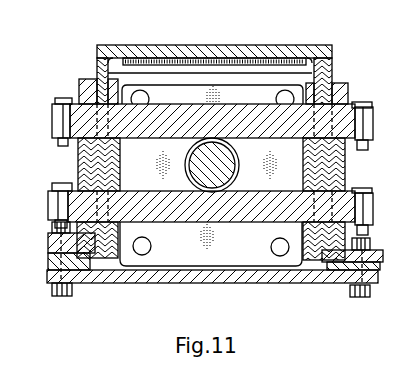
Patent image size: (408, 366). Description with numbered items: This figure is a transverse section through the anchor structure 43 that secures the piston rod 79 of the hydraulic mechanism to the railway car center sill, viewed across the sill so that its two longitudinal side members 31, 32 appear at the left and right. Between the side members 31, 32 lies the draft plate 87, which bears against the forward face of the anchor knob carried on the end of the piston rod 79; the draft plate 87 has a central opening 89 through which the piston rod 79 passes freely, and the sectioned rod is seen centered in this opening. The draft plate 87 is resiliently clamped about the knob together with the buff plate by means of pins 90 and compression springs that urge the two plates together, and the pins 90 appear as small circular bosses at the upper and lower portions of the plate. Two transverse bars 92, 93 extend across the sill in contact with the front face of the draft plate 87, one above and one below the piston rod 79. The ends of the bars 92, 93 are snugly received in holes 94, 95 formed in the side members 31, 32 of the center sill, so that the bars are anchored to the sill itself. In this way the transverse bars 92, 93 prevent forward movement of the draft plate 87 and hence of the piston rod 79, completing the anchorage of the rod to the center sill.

The longitudinal side member 31 is at (97, 50).
The longitudinal side member 32 is at (333, 67).
The anchor structure 43 is at (239, 97).
The piston rod 79 is at (220, 173).
The draft plate 87 is at (175, 88).
The central opening 89 is at (187, 160).
The pin 90 is at (138, 91).
The transverse bar 92 is at (52, 120).
The transverse bar 93 is at (48, 205).
The hole 94 is at (88, 97).
The hole 95 is at (88, 176).